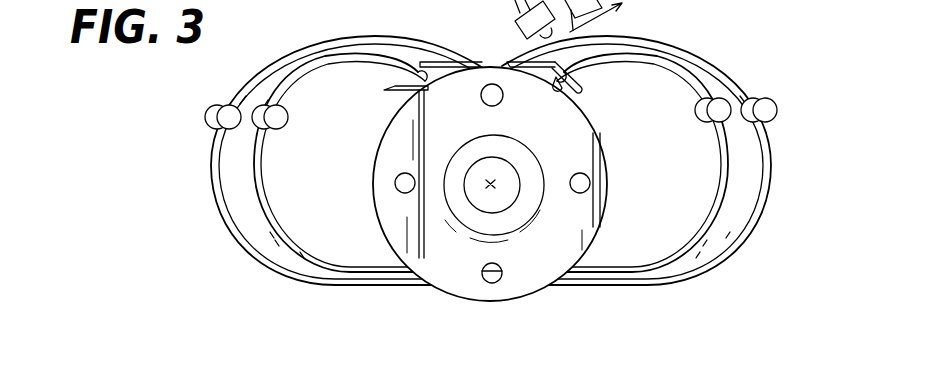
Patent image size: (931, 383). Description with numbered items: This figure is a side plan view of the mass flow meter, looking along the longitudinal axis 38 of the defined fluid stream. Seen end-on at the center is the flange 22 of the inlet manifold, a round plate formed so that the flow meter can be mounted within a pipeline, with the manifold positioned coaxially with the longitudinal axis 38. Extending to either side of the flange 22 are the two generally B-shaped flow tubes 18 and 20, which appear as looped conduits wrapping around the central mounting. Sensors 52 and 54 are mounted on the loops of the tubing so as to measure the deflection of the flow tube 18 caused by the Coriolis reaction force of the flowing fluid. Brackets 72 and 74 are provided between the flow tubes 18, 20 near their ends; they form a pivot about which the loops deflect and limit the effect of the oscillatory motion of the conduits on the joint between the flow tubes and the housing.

The flow tube 18 is at (299, 47).
The flow tube 20 is at (410, 43).
The flange 22 is at (577, 137).
The longitudinal axis 38 is at (492, 183).
The sensor 52 is at (770, 107).
The sensor 54 is at (250, 122).
The bracket 72 is at (583, 87).
The bracket 74 is at (398, 83).